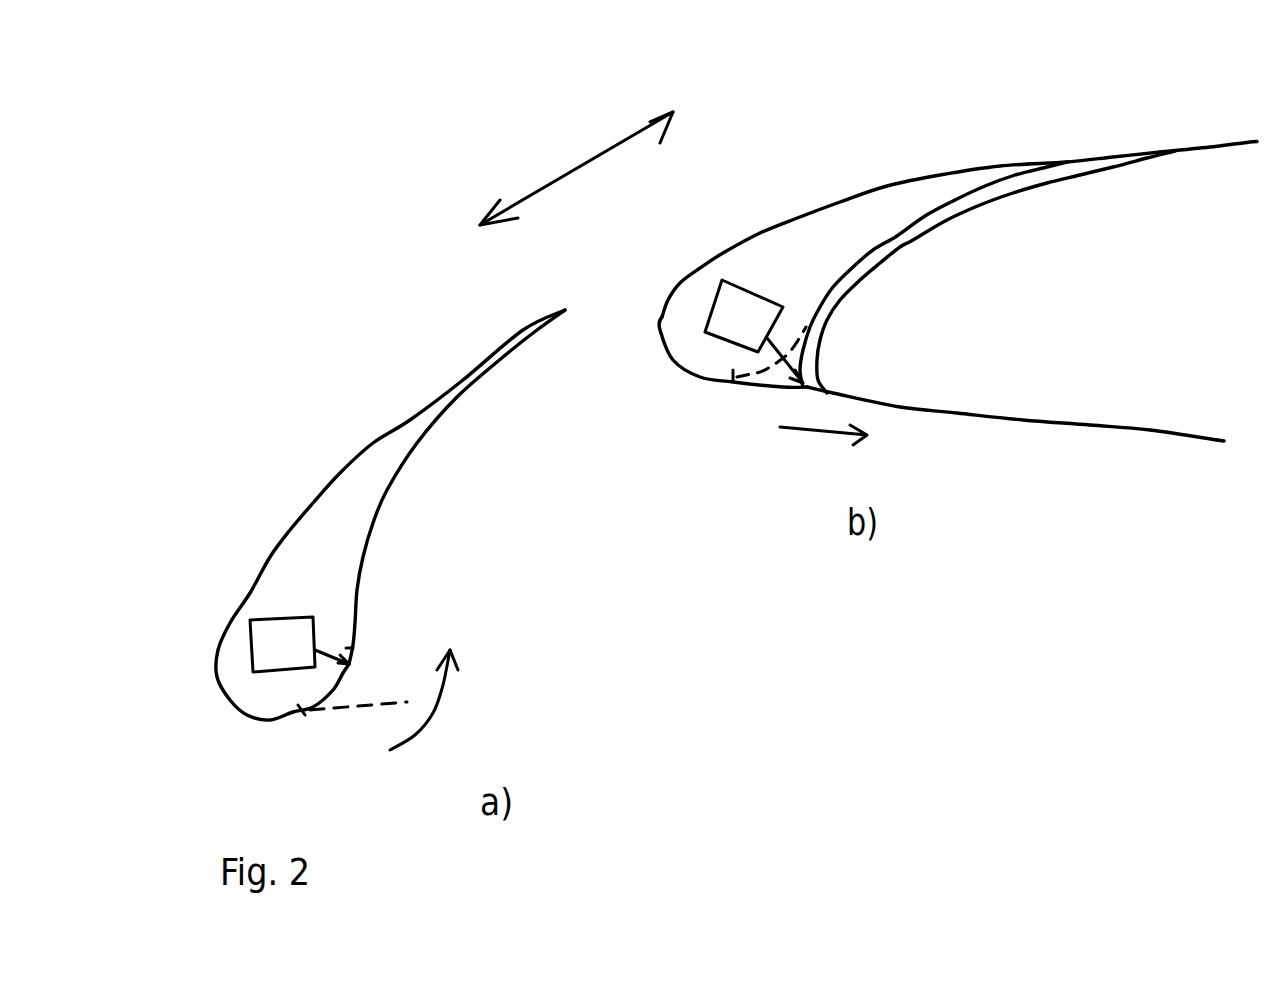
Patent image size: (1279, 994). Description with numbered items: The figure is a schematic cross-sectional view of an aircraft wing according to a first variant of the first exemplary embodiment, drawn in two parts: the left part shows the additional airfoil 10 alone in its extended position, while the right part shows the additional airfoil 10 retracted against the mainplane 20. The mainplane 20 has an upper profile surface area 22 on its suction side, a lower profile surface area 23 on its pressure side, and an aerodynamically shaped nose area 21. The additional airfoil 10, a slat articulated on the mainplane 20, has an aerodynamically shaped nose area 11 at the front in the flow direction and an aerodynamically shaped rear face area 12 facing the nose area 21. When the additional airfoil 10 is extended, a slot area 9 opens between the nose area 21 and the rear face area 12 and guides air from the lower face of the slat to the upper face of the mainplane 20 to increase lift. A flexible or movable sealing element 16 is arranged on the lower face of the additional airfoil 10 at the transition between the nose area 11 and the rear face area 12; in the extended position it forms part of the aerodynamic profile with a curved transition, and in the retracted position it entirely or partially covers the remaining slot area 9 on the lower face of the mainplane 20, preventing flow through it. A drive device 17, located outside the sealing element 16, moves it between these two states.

The slot area 9 is at (588, 502).
The additional airfoil 10 is at (688, 436).
The nose area 11 is at (325, 488).
The rear face area 12 is at (380, 520).
The sealing element 16 is at (350, 680).
The drive device 17 is at (272, 638).
The mainplane 20 is at (1032, 298).
The nose area 21 is at (867, 273).
The upper profile surface area 22 is at (1227, 140).
The lower profile surface area 23 is at (1100, 435).